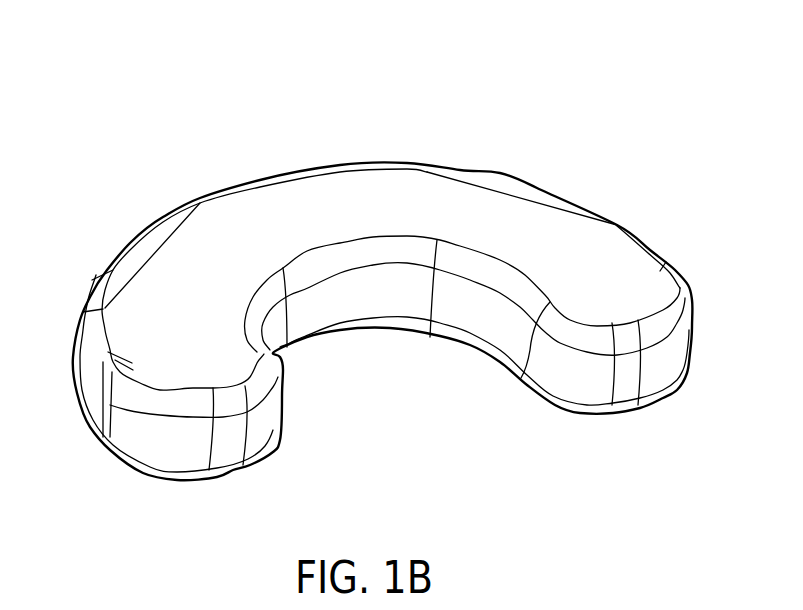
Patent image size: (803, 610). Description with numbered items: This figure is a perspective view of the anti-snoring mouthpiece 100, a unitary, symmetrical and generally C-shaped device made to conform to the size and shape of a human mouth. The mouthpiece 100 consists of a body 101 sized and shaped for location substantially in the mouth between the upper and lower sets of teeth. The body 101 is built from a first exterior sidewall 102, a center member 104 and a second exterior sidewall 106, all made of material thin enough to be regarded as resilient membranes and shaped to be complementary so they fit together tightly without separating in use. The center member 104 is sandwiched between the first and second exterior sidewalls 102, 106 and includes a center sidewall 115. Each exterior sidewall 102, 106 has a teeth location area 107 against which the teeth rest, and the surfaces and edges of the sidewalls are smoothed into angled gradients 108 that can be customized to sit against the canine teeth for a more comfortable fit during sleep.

The anti-snoring mouthpiece 100 is at (122, 136).
The body 101 is at (668, 210).
The first exterior sidewall 102 is at (360, 200).
The center member 104 is at (383, 300).
The second exterior sidewall 106 is at (580, 414).
The teeth location area 107 is at (260, 213).
The angled gradient 108 is at (128, 260).
The center sidewall 115 is at (537, 357).